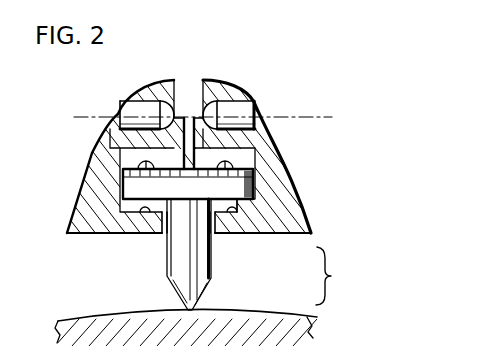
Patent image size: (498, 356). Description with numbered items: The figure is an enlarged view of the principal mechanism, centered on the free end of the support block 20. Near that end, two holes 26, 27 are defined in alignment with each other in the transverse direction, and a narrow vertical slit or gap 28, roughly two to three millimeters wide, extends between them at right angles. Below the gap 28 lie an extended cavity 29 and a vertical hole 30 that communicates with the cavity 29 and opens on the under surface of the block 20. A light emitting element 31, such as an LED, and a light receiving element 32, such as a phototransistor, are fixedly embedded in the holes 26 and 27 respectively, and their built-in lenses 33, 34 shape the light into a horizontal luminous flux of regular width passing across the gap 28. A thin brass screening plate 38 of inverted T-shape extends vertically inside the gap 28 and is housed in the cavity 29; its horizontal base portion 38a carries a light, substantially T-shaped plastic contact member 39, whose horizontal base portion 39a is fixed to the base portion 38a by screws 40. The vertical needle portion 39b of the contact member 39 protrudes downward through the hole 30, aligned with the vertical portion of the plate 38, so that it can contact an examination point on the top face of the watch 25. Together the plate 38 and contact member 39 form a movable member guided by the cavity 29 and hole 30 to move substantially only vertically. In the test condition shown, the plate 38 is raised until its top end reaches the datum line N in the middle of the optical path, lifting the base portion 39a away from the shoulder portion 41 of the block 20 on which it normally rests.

The support block 20 is at (118, 230).
The watch 25 is at (292, 312).
The hole 26 is at (248, 124).
The hole 27 is at (107, 128).
The slit or gap 28 is at (188, 100).
The cavity 29 is at (120, 163).
The hole 30 is at (168, 214).
The light emitting element 31 is at (243, 108).
The light receiving element 32 is at (132, 108).
The lens 33 is at (216, 88).
The lens 34 is at (167, 100).
The screening plate 38 is at (195, 157).
The horizontal base portion 38a is at (253, 172).
The contact member 39 is at (340, 276).
The horizontal base portion 39a is at (262, 234).
The vertical needle portion 39b is at (215, 267).
The screws 40 is at (105, 216).
The shoulder portion 41 is at (160, 214).
The datum line N is at (203, 118).